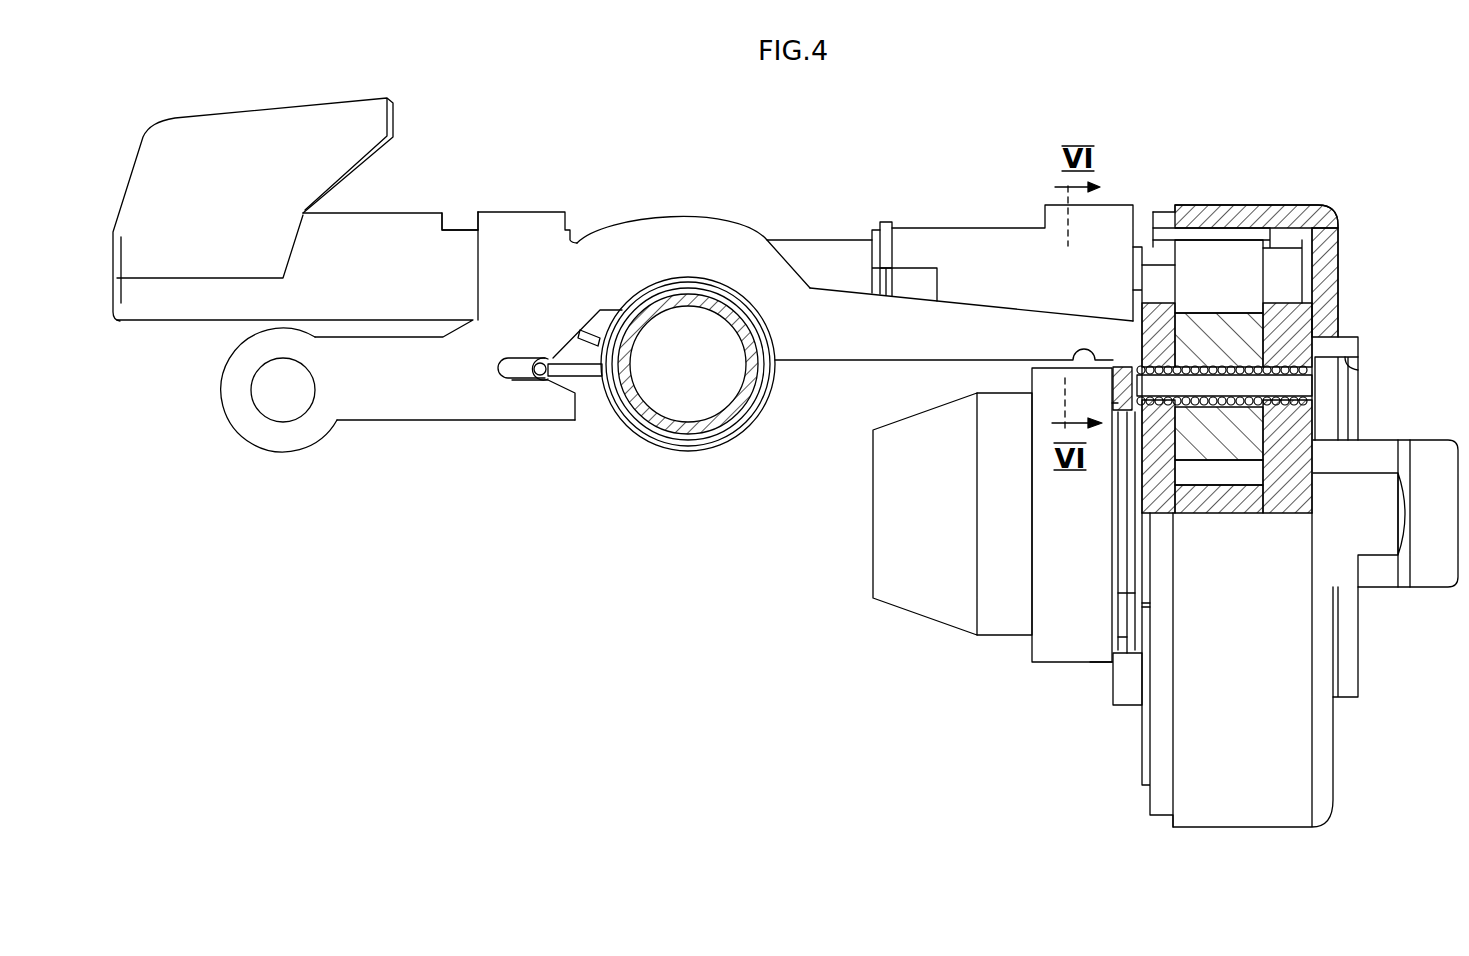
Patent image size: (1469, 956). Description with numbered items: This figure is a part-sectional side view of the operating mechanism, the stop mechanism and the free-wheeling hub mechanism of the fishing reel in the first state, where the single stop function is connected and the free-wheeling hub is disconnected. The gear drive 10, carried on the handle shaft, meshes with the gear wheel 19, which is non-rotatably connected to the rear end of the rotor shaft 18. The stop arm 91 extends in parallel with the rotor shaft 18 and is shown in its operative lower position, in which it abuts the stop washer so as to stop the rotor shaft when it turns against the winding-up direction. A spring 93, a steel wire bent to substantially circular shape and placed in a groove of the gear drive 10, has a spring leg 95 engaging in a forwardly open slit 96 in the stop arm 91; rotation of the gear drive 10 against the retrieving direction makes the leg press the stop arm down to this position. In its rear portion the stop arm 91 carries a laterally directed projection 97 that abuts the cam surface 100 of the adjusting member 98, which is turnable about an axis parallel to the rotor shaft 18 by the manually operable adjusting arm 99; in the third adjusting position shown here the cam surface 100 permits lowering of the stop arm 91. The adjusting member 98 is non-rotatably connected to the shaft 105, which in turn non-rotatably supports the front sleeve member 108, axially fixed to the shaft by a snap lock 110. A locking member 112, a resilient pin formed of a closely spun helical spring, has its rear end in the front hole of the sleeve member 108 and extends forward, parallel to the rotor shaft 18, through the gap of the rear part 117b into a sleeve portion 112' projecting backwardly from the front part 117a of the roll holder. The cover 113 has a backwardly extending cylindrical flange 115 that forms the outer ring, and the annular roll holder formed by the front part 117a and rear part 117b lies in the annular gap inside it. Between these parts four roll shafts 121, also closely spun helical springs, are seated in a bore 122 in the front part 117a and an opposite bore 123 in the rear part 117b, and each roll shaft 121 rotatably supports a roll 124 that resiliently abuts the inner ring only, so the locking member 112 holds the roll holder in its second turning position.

The gear drive 10 is at (720, 428).
The rotor shaft 18 is at (1438, 568).
The gear wheel 19 is at (940, 595).
The stop arm 91 is at (400, 398).
The spring 93 is at (600, 380).
The spring leg 95 is at (546, 386).
The slit 96 is at (505, 386).
The projection 97 is at (488, 214).
The adjusting member 98 is at (372, 243).
The adjusting arm 99 is at (270, 132).
The cam surface 100 is at (455, 231).
The shaft 105 is at (805, 258).
The front sleeve member 108 is at (975, 252).
The snap lock 110 is at (862, 278).
The locking member 112 is at (1104, 426).
The sleeve portion 112' is at (1241, 234).
The cover 113 is at (1324, 258).
The cylindrical flange 115 is at (1233, 213).
The front part 117a is at (1296, 322).
The rear part 117b is at (1165, 500).
The roll shafts 121 is at (1198, 396).
The bore 122 is at (1325, 413).
The bore 123 is at (1148, 336).
The roll 124 is at (1245, 455).